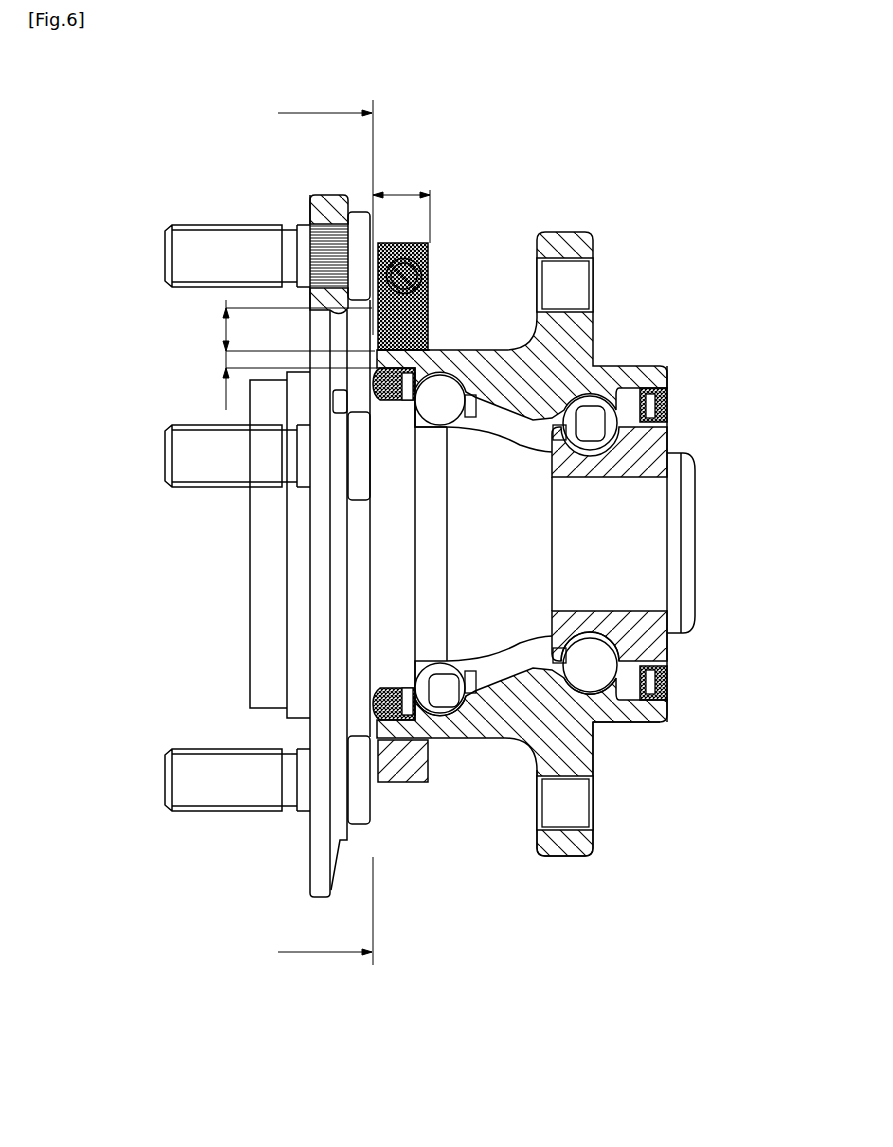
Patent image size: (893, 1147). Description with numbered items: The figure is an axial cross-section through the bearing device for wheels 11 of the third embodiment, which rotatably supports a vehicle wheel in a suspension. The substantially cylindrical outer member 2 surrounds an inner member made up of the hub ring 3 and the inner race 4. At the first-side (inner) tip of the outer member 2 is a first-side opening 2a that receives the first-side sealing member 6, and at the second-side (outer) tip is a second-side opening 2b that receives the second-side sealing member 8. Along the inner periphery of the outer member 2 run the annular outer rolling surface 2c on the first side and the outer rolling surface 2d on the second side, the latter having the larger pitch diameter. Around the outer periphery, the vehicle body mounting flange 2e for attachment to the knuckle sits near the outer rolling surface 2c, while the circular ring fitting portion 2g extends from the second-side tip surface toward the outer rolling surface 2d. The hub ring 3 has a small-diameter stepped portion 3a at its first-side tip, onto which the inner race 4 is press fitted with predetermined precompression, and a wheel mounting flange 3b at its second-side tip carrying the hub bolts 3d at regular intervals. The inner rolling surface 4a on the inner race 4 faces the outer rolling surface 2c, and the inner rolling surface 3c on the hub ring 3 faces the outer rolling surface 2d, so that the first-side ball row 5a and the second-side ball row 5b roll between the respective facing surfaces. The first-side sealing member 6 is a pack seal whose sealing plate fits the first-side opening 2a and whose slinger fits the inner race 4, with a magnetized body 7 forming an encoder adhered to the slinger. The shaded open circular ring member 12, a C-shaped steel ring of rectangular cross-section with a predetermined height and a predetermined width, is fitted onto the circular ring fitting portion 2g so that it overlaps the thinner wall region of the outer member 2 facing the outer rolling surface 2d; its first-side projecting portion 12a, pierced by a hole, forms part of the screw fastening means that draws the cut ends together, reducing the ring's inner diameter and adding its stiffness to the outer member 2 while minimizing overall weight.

The bearing device for wheels 11 is at (78, 106).
The outer member 2 is at (594, 193).
The first-side opening 2a is at (634, 695).
The second-side opening 2b is at (430, 760).
The outer rolling surface on the first side 2c is at (580, 678).
The outer rolling surface on the second side 2d is at (458, 722).
The vehicle body mounting flange 2e is at (575, 858).
The circular ring fitting portion 2g is at (430, 350).
The hub ring 3 is at (297, 186).
The small-diameter stepped portion 3a is at (657, 560).
The wheel mounting flange 3b is at (318, 850).
The inner rolling surface 3c is at (426, 417).
The hub bolts 3d is at (165, 256).
The inner race 4 is at (667, 648).
The inner rolling surface 4a is at (590, 652).
The first-side ball row 5a is at (598, 400).
The second-side ball row 5b is at (447, 378).
The first-side sealing member 6 is at (652, 390).
The magnetized body 7 is at (668, 410).
The second-side sealing member 8 is at (373, 717).
The open circular ring member 12 is at (432, 252).
The first-side projecting portion 12a is at (403, 296).